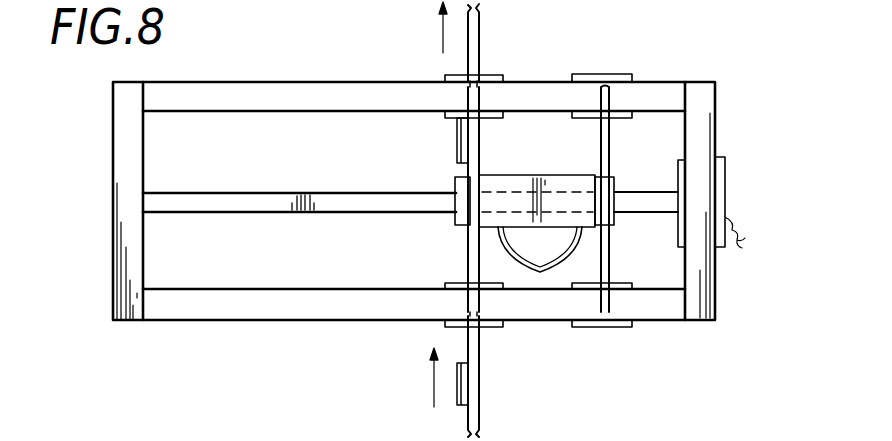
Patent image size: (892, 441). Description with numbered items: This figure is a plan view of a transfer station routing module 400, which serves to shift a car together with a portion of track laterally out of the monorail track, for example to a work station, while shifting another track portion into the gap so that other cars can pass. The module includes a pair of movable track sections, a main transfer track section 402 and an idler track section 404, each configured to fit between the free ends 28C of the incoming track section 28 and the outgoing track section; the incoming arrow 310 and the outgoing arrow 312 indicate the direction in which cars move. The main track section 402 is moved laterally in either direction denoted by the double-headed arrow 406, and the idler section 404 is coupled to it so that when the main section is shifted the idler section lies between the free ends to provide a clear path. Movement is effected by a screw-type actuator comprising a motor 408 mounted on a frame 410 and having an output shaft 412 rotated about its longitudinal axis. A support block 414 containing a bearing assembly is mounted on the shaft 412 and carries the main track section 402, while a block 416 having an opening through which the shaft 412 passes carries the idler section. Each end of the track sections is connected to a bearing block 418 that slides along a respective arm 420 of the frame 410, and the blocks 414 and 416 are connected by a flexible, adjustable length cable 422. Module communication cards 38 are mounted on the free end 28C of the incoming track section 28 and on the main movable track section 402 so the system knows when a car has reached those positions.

The incoming track section 28 is at (480, 20).
The free end 28C is at (479, 78).
The module communication card 38 is at (455, 142).
The incoming arrow 310 is at (430, 383).
The outgoing arrow 312 is at (440, 20).
The transfer station routing module 400 is at (552, 63).
The main transfer track section 402 is at (473, 250).
The idler track section 404 is at (600, 307).
The double-headed arrow 406 is at (422, 230).
The motor 408 is at (726, 160).
The frame 410 is at (697, 318).
The output shaft 412 is at (665, 158).
The support block 414 is at (514, 176).
The block 416 is at (613, 218).
The bearing block 418 is at (446, 76).
The arm 420 is at (316, 67).
The flexible, adjustable length cable 422 is at (536, 270).